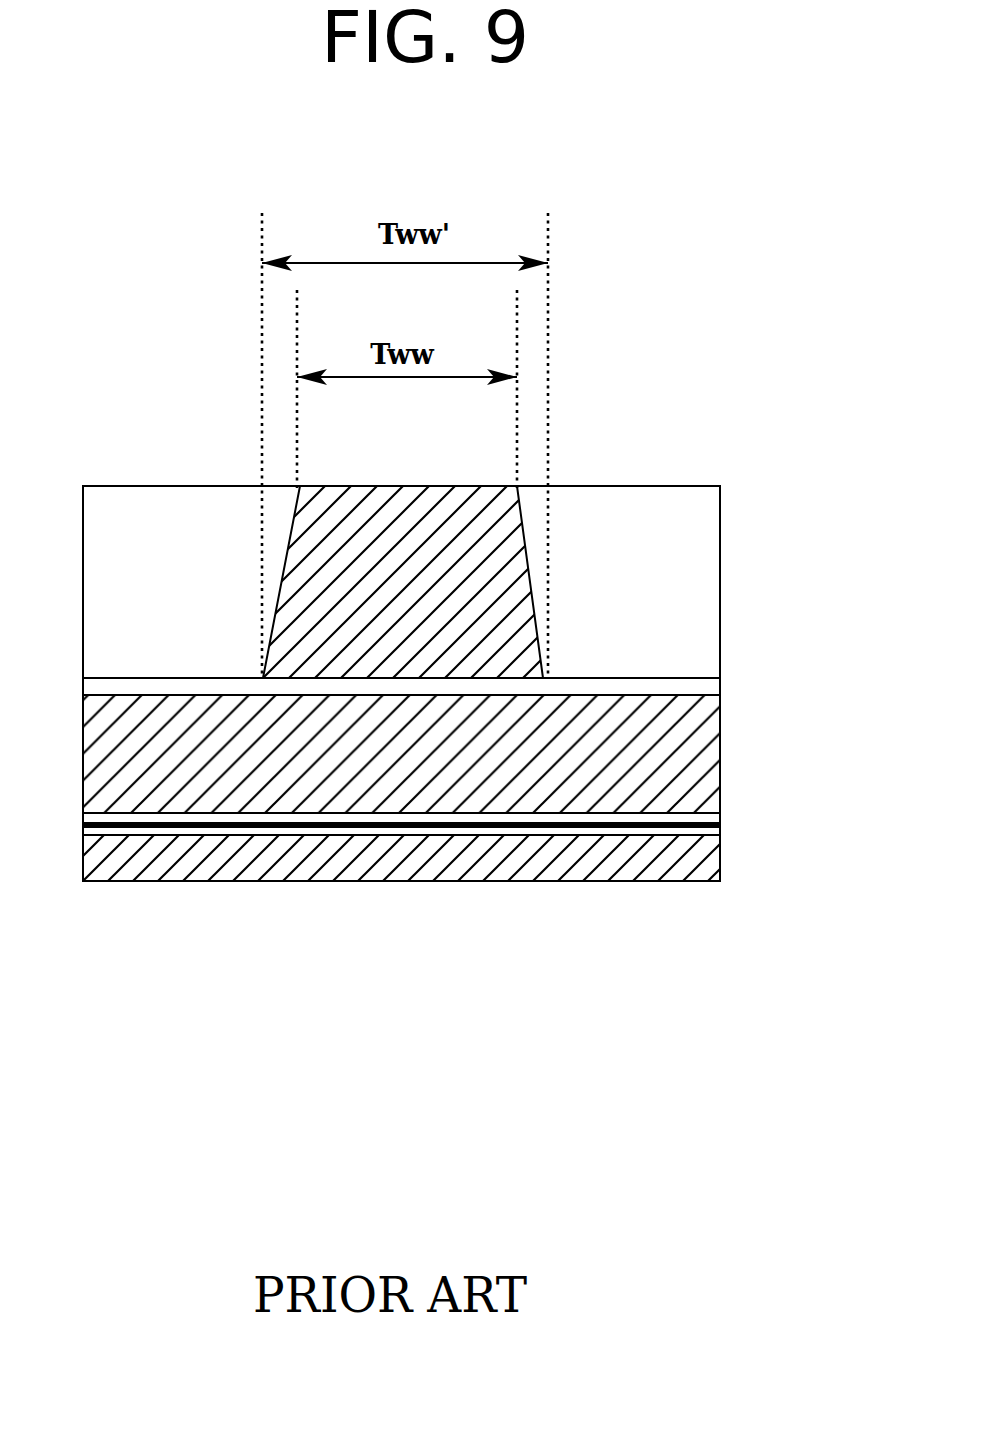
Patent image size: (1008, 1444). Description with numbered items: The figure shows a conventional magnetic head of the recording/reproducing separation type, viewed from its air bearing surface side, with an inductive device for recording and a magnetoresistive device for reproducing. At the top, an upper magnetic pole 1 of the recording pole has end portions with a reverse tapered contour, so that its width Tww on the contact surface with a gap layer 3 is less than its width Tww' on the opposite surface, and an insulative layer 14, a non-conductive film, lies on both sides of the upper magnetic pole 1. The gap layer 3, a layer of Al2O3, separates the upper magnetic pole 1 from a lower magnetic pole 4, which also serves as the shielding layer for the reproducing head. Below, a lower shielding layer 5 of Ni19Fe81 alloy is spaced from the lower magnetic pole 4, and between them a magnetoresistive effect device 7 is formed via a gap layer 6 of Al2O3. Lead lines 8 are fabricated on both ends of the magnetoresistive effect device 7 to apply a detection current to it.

The upper magnetic pole 1 is at (513, 590).
The gap layer 3 is at (702, 687).
The lower magnetic pole 4 is at (673, 780).
The lower shielding layer 5 is at (660, 870).
The gap layer 6 is at (703, 813).
The magnetoresistive effect device 7 is at (393, 827).
The lead lines 8 is at (717, 830).
The insulative layer 14 is at (678, 578).